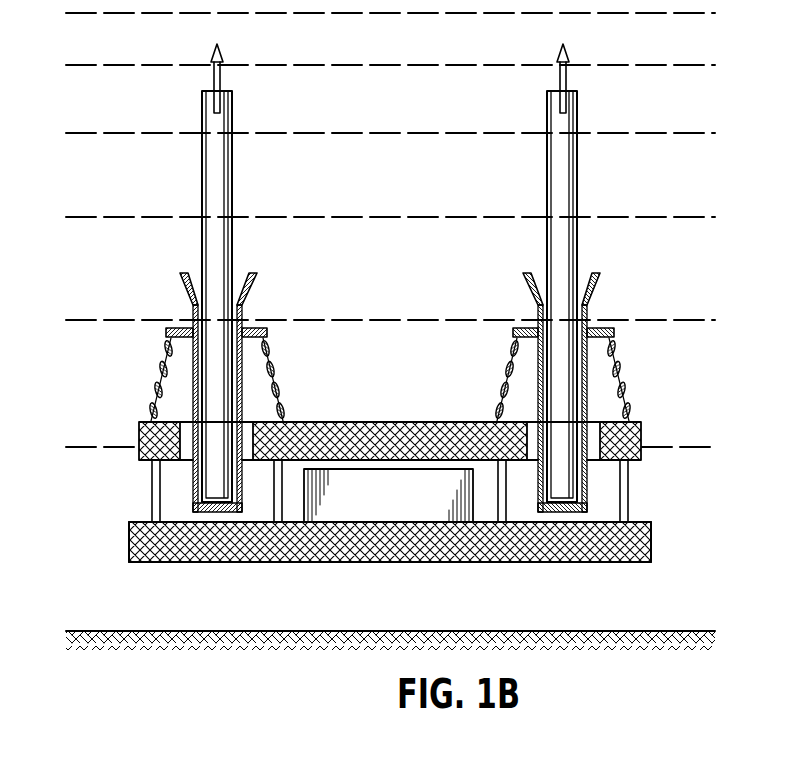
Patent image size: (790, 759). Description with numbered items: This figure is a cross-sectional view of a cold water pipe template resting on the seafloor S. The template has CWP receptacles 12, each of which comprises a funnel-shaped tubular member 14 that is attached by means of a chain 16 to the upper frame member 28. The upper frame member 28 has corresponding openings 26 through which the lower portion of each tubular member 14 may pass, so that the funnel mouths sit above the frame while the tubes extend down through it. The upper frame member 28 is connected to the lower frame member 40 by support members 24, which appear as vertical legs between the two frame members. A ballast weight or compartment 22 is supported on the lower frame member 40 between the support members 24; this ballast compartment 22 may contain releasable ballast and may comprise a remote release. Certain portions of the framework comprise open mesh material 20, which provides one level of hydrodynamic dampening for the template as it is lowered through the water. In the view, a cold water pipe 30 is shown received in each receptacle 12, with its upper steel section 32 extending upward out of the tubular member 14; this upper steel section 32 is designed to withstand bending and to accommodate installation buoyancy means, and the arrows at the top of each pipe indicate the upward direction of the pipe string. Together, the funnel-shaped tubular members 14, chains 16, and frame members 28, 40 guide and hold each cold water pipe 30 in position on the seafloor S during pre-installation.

The CWP receptacle 12 is at (166, 332).
The funnel-shaped tubular member 14 is at (181, 290).
The chain 16 is at (155, 392).
The open mesh material 20 is at (652, 545).
The ballast weight or compartment 22 is at (373, 507).
The support member 24 is at (627, 490).
The opening 26 is at (190, 456).
The upper frame member 28 is at (641, 440).
The cold water pipe 30 is at (242, 185).
The upper steel section 32 is at (208, 112).
The lower frame member 40 is at (130, 548).
The seafloor S is at (665, 630).